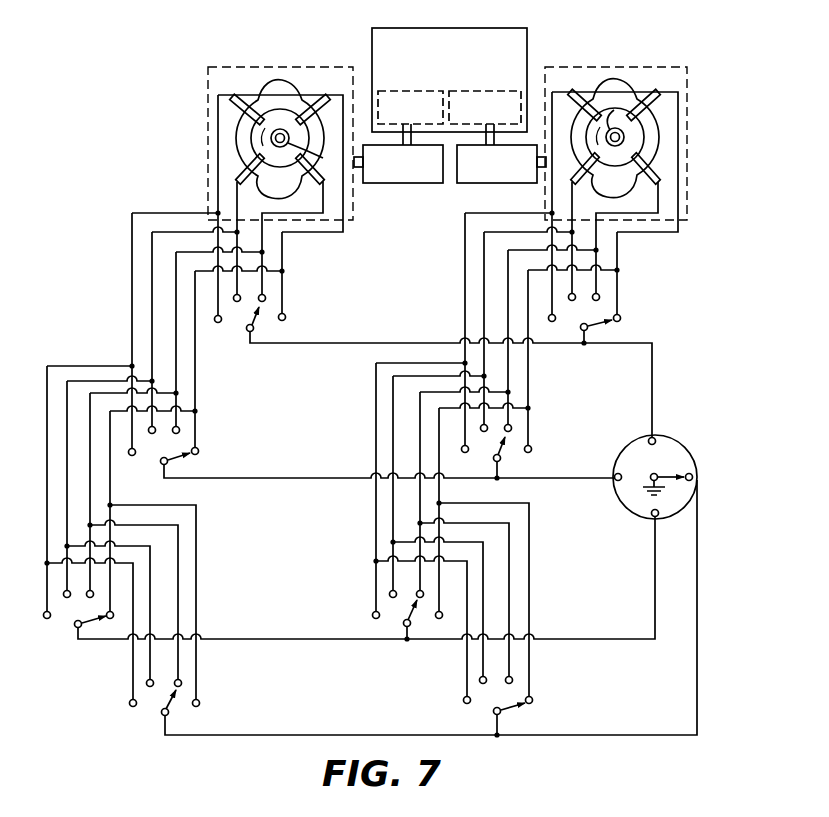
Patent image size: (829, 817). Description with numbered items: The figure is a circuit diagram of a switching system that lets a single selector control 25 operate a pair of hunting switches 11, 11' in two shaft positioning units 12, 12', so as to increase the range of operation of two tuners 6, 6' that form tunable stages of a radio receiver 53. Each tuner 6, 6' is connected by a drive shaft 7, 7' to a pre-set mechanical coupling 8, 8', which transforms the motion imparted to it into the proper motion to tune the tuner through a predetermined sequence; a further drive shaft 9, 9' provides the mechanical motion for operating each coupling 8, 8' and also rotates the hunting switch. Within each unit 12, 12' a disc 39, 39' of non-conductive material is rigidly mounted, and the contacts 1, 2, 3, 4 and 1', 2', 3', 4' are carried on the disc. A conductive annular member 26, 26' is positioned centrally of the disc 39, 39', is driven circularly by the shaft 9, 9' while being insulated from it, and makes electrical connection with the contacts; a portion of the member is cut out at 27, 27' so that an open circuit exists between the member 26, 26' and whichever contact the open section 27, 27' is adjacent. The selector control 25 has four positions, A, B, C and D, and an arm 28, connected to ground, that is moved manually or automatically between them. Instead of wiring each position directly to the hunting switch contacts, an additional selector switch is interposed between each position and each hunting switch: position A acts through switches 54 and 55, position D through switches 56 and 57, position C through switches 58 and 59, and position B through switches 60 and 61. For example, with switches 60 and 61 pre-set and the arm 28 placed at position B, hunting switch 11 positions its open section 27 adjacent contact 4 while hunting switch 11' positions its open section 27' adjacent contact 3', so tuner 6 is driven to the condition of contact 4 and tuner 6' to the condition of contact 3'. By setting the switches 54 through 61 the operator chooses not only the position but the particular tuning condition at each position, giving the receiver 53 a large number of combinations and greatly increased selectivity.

The radio receiver 53 is at (527, 50).
The tuner 6 is at (410, 98).
The tuner 6' is at (485, 98).
The drive shaft 7 is at (382, 134).
The drive shaft 7' is at (515, 134).
The pre-set mechanical coupling 8 is at (403, 172).
The pre-set mechanical coupling 8' is at (497, 172).
The drive shaft 9 is at (331, 171).
The drive shaft 9' is at (569, 147).
The unit 12 is at (267, 135).
The unit 12' is at (629, 135).
The hunting switch 11 is at (280, 136).
The hunting switch 11' is at (615, 135).
The disc 39 is at (245, 138).
The disc 39' is at (650, 135).
The annular member 26 is at (235, 147).
The annular member 26' is at (655, 136).
The cut-out section 27 is at (307, 88).
The open section 27' is at (676, 157).
The contact 1 is at (246, 102).
The contact 2 is at (245, 173).
The contact 3 is at (316, 173).
The contact 4 is at (313, 100).
The contact 1' is at (582, 100).
The contact 2' is at (579, 173).
The contact 3' is at (652, 173).
The contact 4' is at (647, 98).
The switch 54 is at (304, 337).
The switch 55 is at (655, 334).
The switch 56 is at (219, 475).
The switch 57 is at (535, 473).
The switch 58 is at (69, 661).
The switch 59 is at (364, 629).
The switch 60 is at (222, 728).
The switch 61 is at (545, 728).
The selector control 25 is at (661, 476).
The arm 28 is at (672, 472).